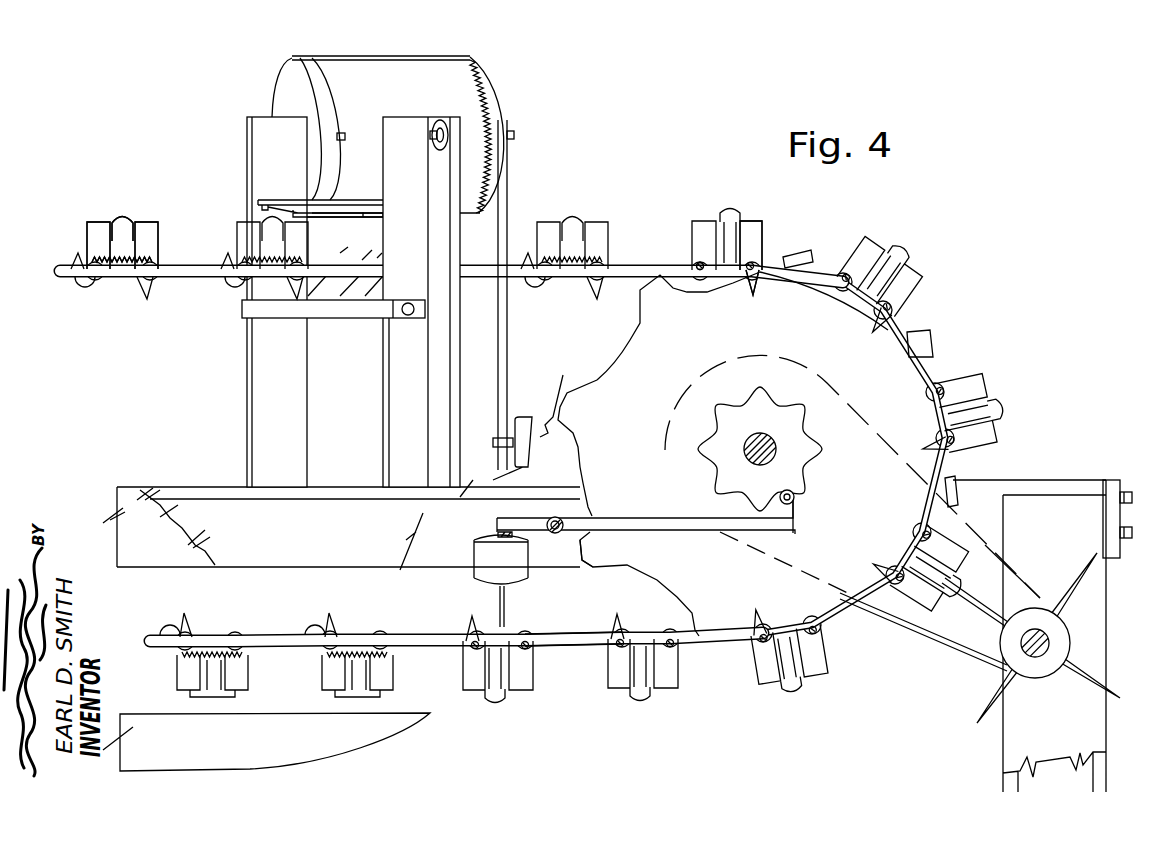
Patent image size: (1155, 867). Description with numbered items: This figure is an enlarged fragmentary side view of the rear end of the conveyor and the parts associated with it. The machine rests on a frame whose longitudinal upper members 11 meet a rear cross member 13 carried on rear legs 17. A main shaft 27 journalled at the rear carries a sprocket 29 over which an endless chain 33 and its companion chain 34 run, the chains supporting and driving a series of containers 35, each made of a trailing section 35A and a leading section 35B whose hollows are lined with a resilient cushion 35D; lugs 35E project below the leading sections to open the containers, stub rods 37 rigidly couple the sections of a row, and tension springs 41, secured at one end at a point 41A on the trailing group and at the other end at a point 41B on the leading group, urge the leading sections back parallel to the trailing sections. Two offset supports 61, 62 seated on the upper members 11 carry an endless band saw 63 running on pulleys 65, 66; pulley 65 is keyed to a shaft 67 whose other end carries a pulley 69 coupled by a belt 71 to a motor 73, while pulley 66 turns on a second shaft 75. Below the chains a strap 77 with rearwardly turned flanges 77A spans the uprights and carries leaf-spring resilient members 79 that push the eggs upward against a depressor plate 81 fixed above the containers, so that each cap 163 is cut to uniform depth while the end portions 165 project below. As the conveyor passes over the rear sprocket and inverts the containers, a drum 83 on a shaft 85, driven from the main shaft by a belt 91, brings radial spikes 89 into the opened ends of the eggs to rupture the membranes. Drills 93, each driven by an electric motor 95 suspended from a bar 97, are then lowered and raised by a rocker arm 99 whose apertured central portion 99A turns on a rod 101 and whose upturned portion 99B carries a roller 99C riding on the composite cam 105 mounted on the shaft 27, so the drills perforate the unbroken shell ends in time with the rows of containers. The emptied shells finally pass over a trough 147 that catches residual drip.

The longitudinal upper members 11 is at (200, 492).
The rear cross member 13 is at (1113, 478).
The rear legs 17 is at (1003, 760).
The shaft 27 is at (762, 410).
The sprocket 29 is at (630, 335).
The endless chain 33 is at (283, 647).
The endless chain 34 is at (570, 646).
The container 35 is at (71, 239).
The trailing section 35A is at (693, 237).
The leading section 35B is at (787, 219).
The resilient cushion 35D is at (907, 267).
The integral lugs 35E is at (760, 292).
The stub rods 37 is at (700, 270).
The tension springs 41 is at (123, 265).
The spring securing point 41A is at (90, 252).
The spring securing point 41B is at (152, 253).
The support 61 is at (393, 403).
The support 62 is at (250, 402).
The endless band saw 63 is at (413, 33).
The pulley 65 is at (442, 118).
The pulley 66 is at (327, 84).
The shaft 67 is at (515, 135).
The pulley 69 is at (503, 122).
The belt 71 is at (508, 205).
The motor 73 is at (542, 413).
The second shaft 75 is at (352, 132).
The strap 77 is at (330, 306).
The rearwardly turned flanges 77A is at (420, 312).
The resilient members 79 is at (343, 258).
The depressor plate 81 is at (367, 190).
The drum 83 is at (1003, 635).
The shaft 85 is at (1043, 651).
The radial spikes 89 is at (987, 700).
The belt 91 is at (927, 632).
The drills 93 is at (505, 605).
The electric motors 95 is at (480, 568).
The bar 97 is at (497, 533).
The rocker arm 99 is at (533, 500).
The apertured central portion 99A is at (567, 520).
The upturned portion 99B is at (795, 523).
The roller 99C is at (795, 497).
The rod 101 is at (577, 562).
The composite cam 105 is at (818, 447).
The trough 147 is at (397, 727).
The caps 163 is at (132, 222).
The end portions 165 is at (860, 297).